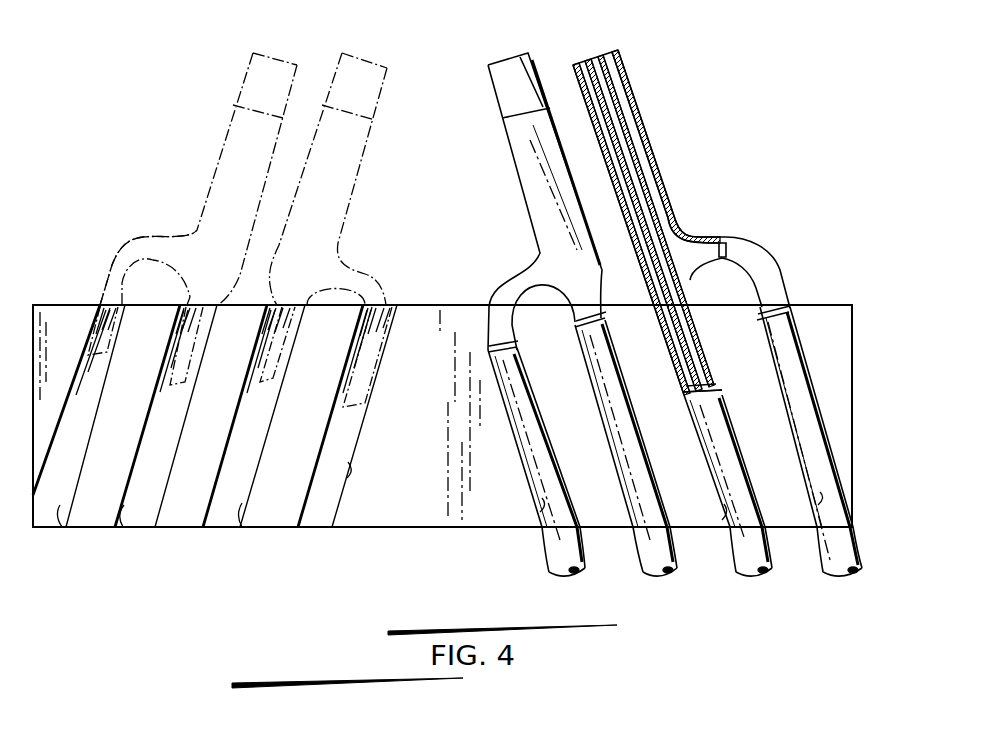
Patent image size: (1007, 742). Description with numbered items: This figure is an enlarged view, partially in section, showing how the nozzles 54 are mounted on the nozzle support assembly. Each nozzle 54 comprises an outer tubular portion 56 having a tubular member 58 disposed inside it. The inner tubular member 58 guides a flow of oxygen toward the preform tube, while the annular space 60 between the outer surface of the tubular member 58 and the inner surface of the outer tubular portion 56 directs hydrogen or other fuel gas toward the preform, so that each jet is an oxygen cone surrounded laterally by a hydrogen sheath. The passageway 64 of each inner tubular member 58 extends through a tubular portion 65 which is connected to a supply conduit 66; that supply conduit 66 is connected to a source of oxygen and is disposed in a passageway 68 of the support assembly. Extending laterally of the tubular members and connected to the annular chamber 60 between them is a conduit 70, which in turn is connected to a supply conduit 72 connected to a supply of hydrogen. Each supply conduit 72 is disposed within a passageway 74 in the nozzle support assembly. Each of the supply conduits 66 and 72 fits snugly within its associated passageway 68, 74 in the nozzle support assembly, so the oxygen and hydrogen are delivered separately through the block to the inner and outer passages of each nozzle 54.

The nozzle 54 is at (230, 134).
The outer tubular portion 56 is at (653, 222).
The tubular member 58 is at (617, 102).
The annular space 60 is at (653, 160).
The passageway 64 is at (640, 200).
The tubular portion 65 is at (185, 340).
The supply conduit 66 is at (738, 477).
The passageway 68 is at (125, 510).
The conduit 70 is at (125, 252).
The supply conduit 72 is at (822, 425).
The passageway 74 is at (60, 515).